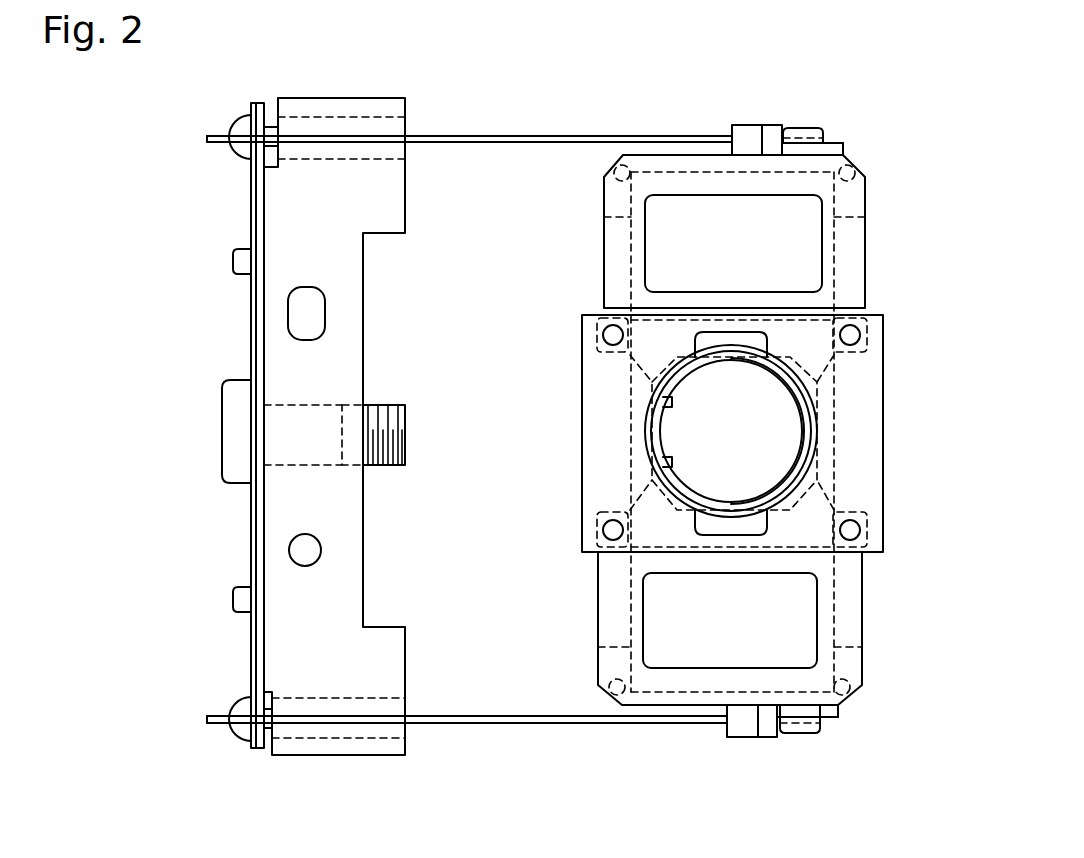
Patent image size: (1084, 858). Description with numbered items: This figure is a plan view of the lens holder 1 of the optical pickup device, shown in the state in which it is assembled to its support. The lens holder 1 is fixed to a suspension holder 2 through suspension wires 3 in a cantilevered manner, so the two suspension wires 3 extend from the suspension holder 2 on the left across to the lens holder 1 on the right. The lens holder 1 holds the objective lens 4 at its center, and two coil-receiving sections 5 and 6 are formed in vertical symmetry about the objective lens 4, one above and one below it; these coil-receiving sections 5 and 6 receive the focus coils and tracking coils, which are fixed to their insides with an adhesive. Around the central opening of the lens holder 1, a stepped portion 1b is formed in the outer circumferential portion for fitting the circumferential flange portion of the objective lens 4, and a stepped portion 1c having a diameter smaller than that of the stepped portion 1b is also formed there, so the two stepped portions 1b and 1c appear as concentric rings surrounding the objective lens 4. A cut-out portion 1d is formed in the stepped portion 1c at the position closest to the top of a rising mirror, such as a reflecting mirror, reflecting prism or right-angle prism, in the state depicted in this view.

The lens holder 1 is at (866, 250).
The stepped portion 1b is at (647, 412).
The stepped portion 1c is at (793, 468).
The cut-out portion 1d is at (665, 441).
The suspension holder 2 is at (290, 363).
The suspension wires 3 is at (531, 136).
The objective lens 4 is at (765, 430).
The coil-receiving section 5 is at (707, 212).
The coil-receiving section 6 is at (717, 655).